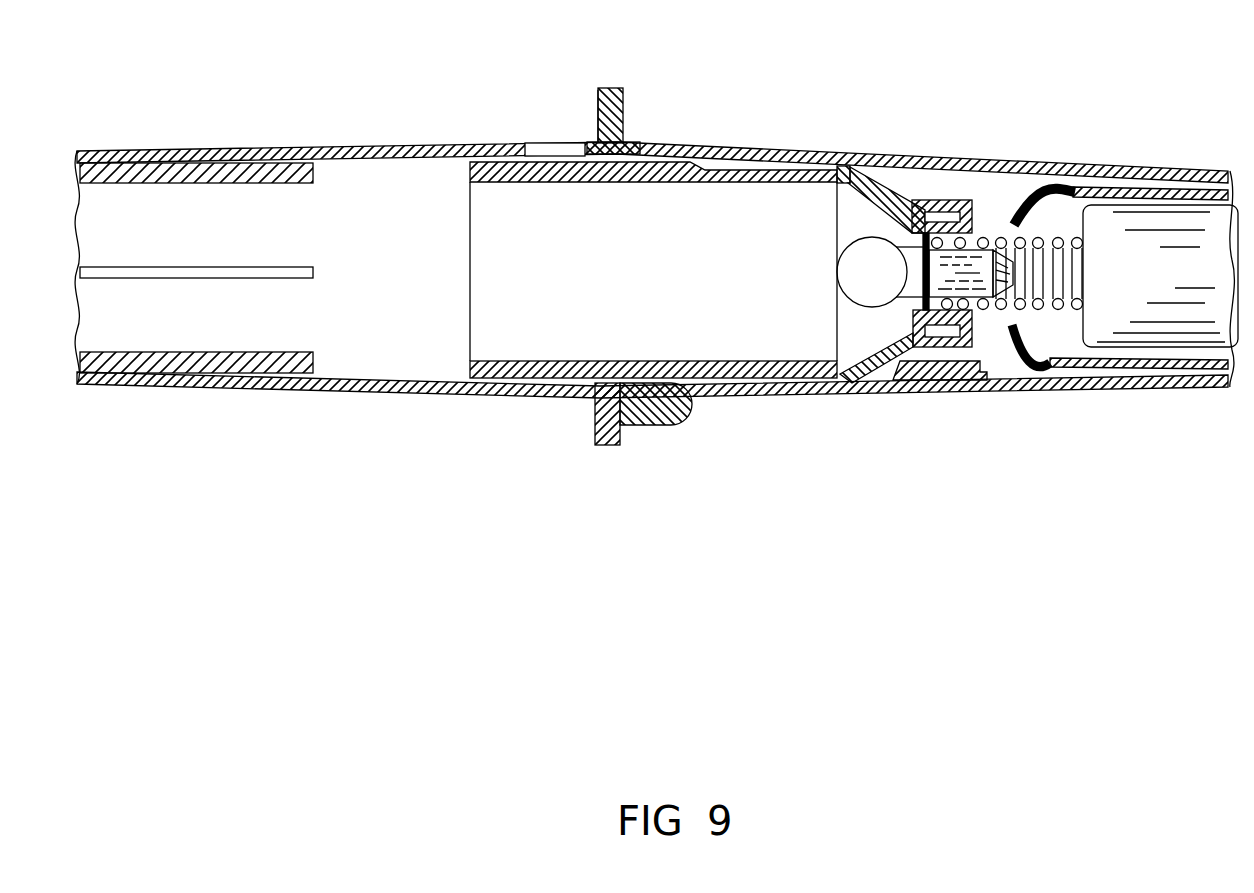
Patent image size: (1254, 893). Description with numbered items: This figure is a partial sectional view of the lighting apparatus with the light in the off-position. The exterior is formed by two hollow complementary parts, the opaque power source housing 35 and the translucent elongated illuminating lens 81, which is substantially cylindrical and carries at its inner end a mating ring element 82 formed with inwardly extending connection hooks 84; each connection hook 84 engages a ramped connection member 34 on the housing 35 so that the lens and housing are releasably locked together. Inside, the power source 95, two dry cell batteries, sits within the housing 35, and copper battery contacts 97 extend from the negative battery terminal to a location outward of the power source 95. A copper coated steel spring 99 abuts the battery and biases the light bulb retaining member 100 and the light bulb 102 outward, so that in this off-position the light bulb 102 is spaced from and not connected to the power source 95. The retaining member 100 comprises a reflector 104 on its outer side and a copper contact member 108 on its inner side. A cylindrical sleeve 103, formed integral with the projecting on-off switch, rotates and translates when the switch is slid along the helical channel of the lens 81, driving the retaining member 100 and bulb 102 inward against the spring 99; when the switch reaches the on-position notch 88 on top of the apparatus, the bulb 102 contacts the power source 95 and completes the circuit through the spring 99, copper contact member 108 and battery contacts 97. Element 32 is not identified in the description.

The upper locating post 32 is at (617, 88).
The ramped connection member 34 is at (640, 423).
The power source housing 35 is at (1210, 383).
The elongated illuminating lens 81 is at (143, 383).
The mating ring element 82 is at (598, 120).
The connection hook 84 is at (668, 428).
The on-position notch 88 is at (553, 142).
The power source 95 is at (1165, 225).
The battery contact 97 is at (1073, 185).
The spring 99 is at (1042, 312).
The light bulb retaining member 100 is at (903, 198).
The light bulb 102 is at (862, 258).
The sleeve 103 is at (512, 378).
The reflector 104 is at (870, 225).
The copper contact member 108 is at (973, 200).